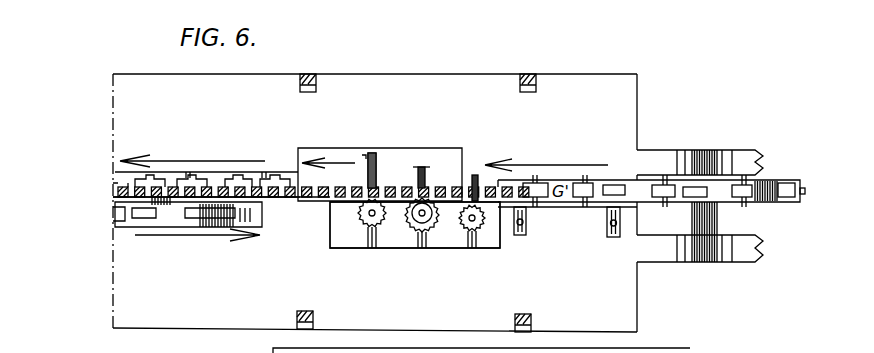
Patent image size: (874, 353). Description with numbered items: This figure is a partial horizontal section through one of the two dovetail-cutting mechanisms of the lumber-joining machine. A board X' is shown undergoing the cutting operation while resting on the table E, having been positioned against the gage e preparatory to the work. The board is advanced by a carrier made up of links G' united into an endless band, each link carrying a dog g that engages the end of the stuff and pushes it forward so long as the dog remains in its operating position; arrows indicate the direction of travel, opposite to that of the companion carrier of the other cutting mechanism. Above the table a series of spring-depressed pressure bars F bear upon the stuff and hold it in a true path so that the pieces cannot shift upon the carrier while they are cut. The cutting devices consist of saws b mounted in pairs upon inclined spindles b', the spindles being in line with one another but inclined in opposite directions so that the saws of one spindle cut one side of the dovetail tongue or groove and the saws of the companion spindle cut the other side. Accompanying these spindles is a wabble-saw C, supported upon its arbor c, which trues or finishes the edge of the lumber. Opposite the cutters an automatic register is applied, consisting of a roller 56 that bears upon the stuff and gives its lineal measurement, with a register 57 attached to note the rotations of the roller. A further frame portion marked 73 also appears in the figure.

The roller 56 is at (368, 156).
The register 57 is at (416, 177).
The frame rail 73 is at (700, 206).
The dog g is at (536, 183).
The links G' is at (206, 159).
The table E is at (380, 150).
The spring-depressed bars F is at (322, 202).
The board X' is at (386, 168).
The saws b is at (376, 223).
The inclined spindles b' is at (393, 223).
The arbor c is at (478, 222).
The wabble-saw C is at (467, 226).
The gage e is at (580, 208).